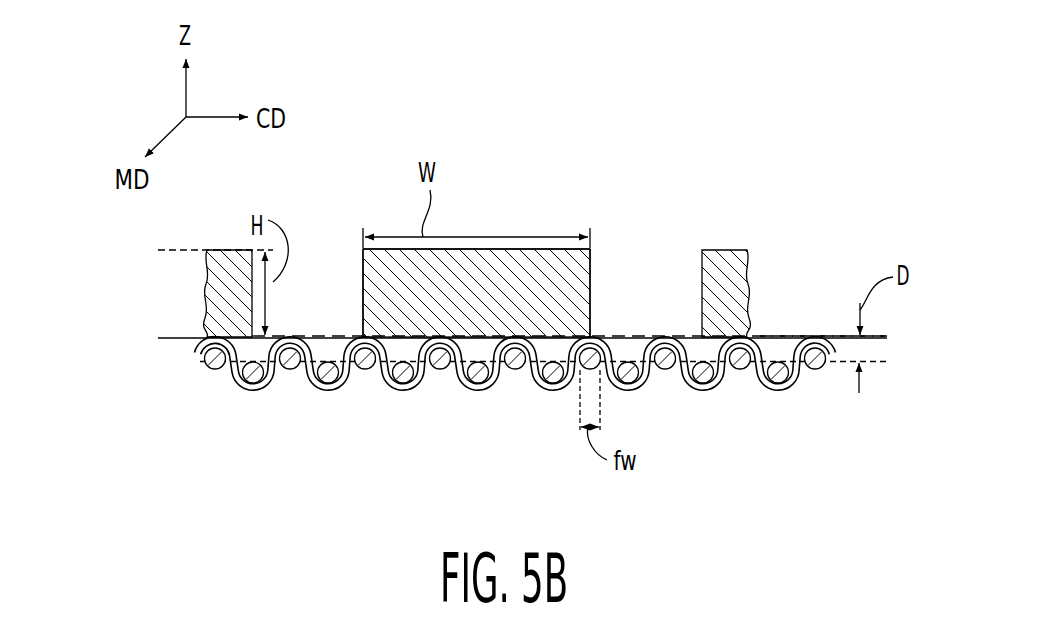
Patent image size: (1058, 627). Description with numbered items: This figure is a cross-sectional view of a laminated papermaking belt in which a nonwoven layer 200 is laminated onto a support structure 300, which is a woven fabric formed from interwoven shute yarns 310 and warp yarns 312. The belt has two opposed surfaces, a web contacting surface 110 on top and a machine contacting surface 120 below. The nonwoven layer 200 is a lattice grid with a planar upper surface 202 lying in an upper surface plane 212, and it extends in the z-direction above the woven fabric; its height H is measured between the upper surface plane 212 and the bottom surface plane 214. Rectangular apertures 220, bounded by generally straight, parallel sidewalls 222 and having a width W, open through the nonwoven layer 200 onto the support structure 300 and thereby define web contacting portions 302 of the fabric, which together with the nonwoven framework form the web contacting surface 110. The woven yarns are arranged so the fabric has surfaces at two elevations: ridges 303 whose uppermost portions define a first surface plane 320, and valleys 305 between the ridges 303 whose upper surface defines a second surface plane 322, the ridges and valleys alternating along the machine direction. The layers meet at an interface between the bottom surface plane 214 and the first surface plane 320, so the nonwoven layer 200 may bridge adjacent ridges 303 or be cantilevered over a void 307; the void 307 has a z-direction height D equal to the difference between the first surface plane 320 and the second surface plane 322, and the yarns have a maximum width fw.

The web contacting surface 110 is at (680, 185).
The machine contacting surface 120 is at (708, 420).
The nonwoven layer 200 is at (603, 223).
The upper surface 202 is at (522, 248).
The upper surface plane 212 is at (184, 250).
The bottom surface plane 214 is at (168, 337).
The apertures 220 is at (308, 262).
The sidewalls 222 is at (362, 278).
The support structure 300 is at (182, 350).
The web contacting portions 302 is at (332, 333).
The ridges 303 is at (437, 368).
The valleys 305 is at (399, 354).
The void 307 is at (557, 343).
The shute yarns 310 is at (327, 390).
The warp yarns 312 is at (252, 378).
The first surface plane 320 is at (843, 335).
The second surface plane 322 is at (843, 365).